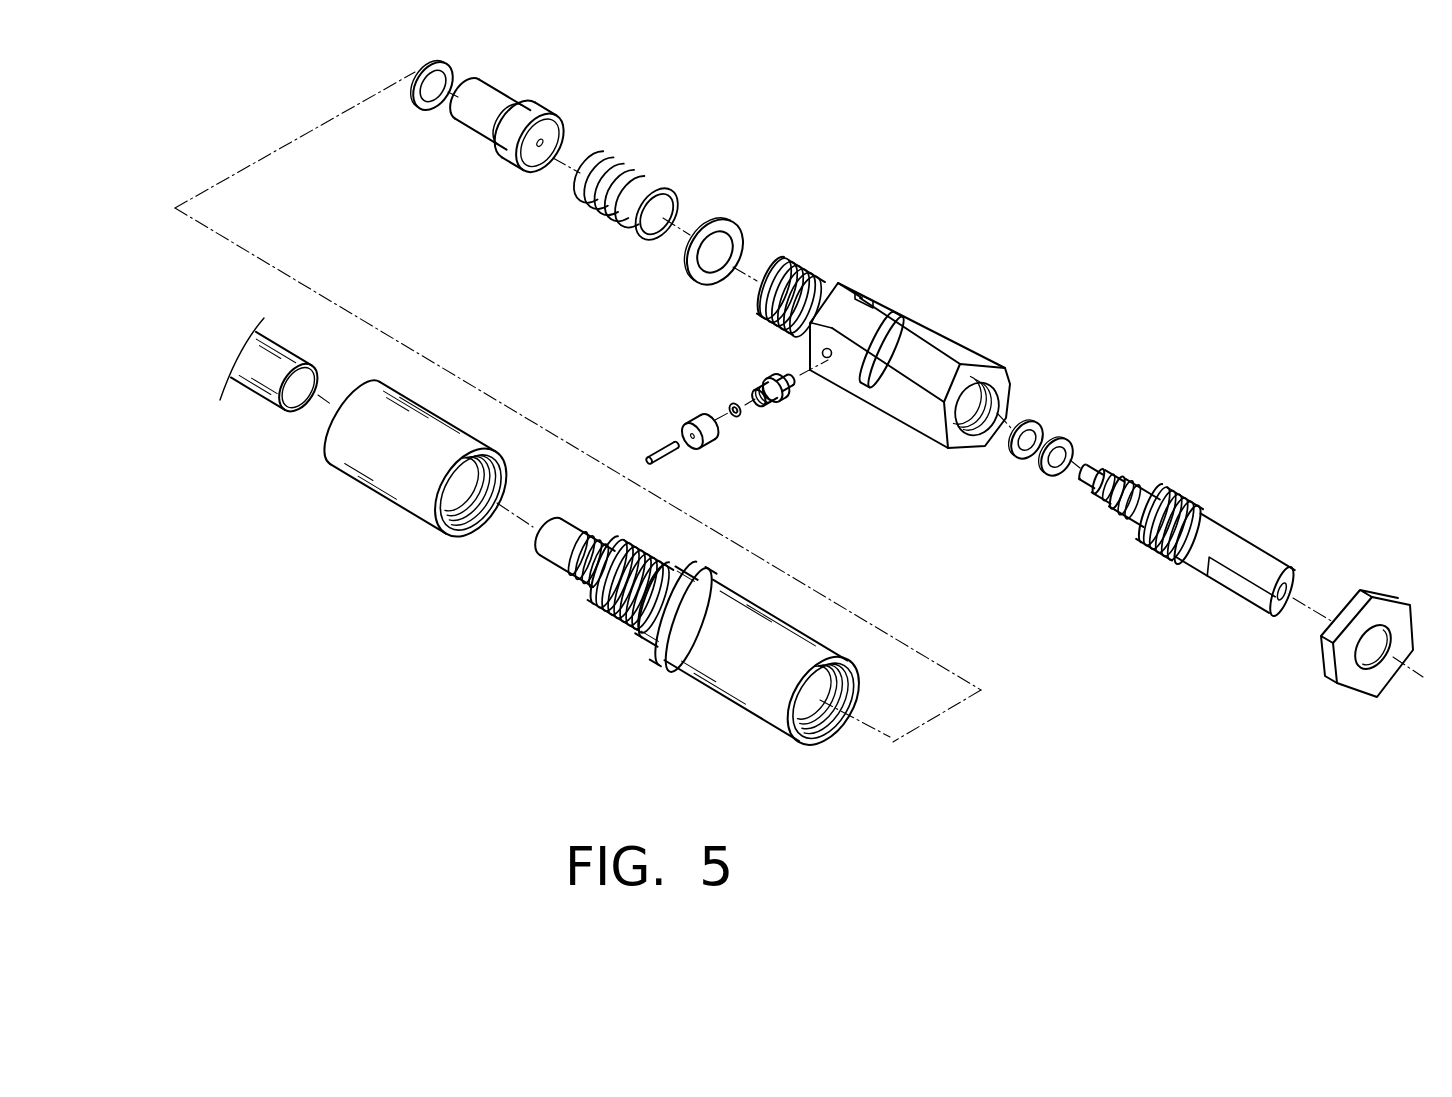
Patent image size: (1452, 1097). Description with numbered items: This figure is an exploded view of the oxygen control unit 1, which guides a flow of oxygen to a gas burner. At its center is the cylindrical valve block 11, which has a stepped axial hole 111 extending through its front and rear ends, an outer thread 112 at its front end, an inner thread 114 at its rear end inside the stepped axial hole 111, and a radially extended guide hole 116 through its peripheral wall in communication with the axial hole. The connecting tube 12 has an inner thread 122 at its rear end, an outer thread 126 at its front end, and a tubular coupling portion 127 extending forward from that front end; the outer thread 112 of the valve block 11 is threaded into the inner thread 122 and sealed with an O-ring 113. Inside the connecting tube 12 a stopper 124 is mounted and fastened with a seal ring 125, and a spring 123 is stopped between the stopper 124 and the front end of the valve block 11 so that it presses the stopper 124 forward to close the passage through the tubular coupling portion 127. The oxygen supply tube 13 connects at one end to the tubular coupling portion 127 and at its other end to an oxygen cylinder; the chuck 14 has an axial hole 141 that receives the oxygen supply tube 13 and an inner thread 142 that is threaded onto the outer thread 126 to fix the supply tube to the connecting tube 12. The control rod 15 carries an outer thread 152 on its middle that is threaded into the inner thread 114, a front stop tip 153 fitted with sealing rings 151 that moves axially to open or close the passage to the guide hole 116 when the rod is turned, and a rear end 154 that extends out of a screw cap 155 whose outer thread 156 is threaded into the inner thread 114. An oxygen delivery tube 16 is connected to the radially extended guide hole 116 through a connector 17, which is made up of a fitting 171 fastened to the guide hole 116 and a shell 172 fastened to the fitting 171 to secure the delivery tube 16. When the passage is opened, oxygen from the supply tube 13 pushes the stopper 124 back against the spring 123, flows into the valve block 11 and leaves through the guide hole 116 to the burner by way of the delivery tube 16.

The oxygen control unit 1 is at (950, 270).
The cylindrical valve block 11 is at (940, 379).
The stepped axial hole 111 is at (1003, 397).
The outer thread 112 is at (795, 262).
The O-ring 113 is at (688, 258).
The inner thread 114 is at (975, 442).
The radially extended guide hole 116 is at (842, 370).
The connecting tube 12 is at (700, 670).
The inner thread 122 is at (818, 704).
The spring 123 is at (646, 186).
The stopper 124 is at (511, 150).
The seal ring 125 is at (449, 83).
The outer thread 126 is at (614, 617).
The tubular coupling portion 127 is at (566, 573).
The oxygen supply tube 13 is at (252, 392).
The chuck 14 is at (416, 526).
The axial hole 141 is at (453, 488).
The inner thread 142 is at (483, 506).
The control rod 15 is at (1189, 582).
The sealing rings 151 is at (1067, 445).
The outer thread 152 is at (1160, 547).
The front stop tip 153 is at (1084, 482).
The rear end 154 is at (1241, 588).
The screw cap 155 is at (1367, 657).
The outer thread 156 is at (1346, 624).
The oxygen delivery tube 16 is at (654, 445).
The connector 17 is at (705, 412).
The fitting 171 is at (773, 396).
The shell 172 is at (701, 446).